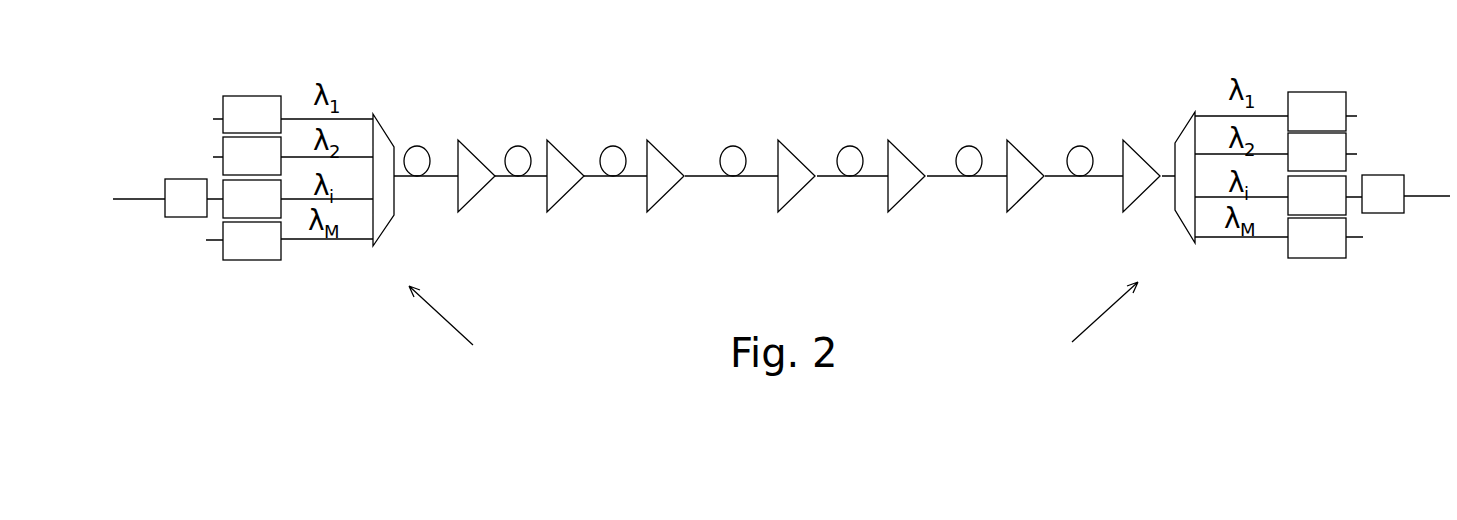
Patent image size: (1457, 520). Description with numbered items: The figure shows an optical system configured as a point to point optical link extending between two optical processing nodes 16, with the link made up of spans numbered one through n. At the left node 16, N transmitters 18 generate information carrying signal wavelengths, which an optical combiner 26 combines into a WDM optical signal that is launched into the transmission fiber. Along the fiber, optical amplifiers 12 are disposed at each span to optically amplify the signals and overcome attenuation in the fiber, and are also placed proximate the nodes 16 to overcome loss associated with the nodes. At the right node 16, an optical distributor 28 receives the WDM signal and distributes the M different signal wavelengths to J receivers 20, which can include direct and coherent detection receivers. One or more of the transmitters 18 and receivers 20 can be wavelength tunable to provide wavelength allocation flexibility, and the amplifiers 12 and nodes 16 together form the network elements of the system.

The optical amplifiers 12 is at (767, 123).
The optical processing nodes 16 is at (773, 333).
The transmitters 18 is at (1410, 233).
The receivers 20 is at (177, 217).
The optical combiners 26 is at (387, 130).
The optical distributors 28 is at (1183, 130).